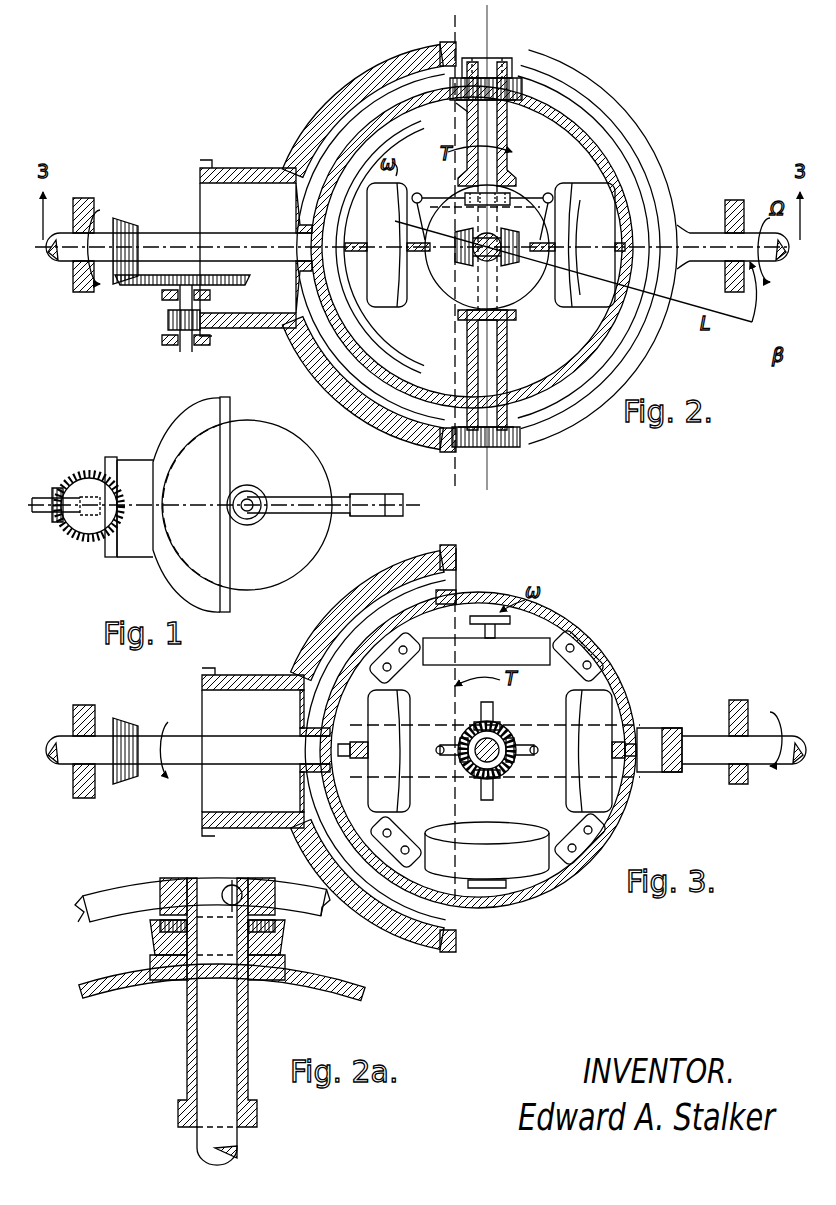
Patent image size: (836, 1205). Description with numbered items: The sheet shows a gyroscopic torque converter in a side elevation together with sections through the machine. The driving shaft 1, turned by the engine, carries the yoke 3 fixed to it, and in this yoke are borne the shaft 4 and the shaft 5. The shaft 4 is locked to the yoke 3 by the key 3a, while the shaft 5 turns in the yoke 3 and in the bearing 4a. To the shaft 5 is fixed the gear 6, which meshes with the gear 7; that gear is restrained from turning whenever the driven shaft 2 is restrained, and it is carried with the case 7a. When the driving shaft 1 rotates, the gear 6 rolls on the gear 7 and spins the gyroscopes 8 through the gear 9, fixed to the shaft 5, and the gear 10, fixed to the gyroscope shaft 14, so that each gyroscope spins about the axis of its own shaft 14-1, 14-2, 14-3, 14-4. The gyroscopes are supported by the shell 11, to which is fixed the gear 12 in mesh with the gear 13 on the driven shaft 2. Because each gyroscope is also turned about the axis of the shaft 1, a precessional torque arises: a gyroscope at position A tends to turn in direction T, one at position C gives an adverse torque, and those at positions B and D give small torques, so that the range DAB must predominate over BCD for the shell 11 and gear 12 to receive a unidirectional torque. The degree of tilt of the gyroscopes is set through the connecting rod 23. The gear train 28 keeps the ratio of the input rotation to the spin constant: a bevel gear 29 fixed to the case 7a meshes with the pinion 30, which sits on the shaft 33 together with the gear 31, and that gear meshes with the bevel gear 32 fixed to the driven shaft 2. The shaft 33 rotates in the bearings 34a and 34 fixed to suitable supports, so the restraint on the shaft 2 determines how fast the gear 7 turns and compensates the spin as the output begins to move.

In FIG. 2, the driving shaft 1 is at (718, 262).
In FIG. 3, the driving shaft 1 is at (700, 770).
In FIG. 2, the driven shaft 2 is at (76, 268).
In FIG. 1, the driven shaft 2 is at (43, 495).
In FIG. 3, the driven shaft 2 is at (76, 770).
In FIG. 2, the yoke 3 is at (642, 150).
In FIG. 1, the yoke 3 is at (290, 512).
In FIG. 3, the yoke 3 is at (312, 773).
In FIG. 2A, the yoke 3 is at (300, 912).
In FIG. 2, the key 3a is at (508, 70).
In FIG. 2A, the key 3a is at (226, 884).
In FIG. 2, the shaft 4 is at (497, 128).
In FIG. 1, the shaft 4 is at (406, 505).
In FIG. 2A, the shaft 4 is at (234, 1146).
In FIG. 2, the bearing 4a is at (508, 160).
In FIG. 2, the shaft 5 is at (520, 335).
In FIG. 2, the gear 6 is at (520, 438).
In FIG. 2, the gear 7 is at (470, 46).
In FIG. 1, the gear 7 is at (232, 598).
In FIG. 3, the gear 7 is at (456, 552).
In FIG. 2, the case 7a is at (322, 372).
In FIG. 1, the case 7a is at (178, 566).
In FIG. 3, the case 7a is at (328, 626).
In FIG. 2, the gyroscopes 8 is at (445, 290).
In FIG. 2, the gear 9 is at (492, 240).
In FIG. 3, the gear 9 is at (514, 748).
In FIG. 2, the gear 10 is at (500, 258).
In FIG. 3, the gear 10 is at (498, 738).
In FIG. 2, the shell 11 is at (576, 138).
In FIG. 1, the shell 11 is at (300, 560).
In FIG. 3, the shell 11 is at (560, 622).
In FIG. 2A, the shell 11 is at (330, 980).
In FIG. 2, the gear 12 is at (522, 90).
In FIG. 1, the gear 12 is at (256, 492).
In FIG. 2A, the gear 12 is at (158, 938).
In FIG. 2, the gear 13 is at (470, 104).
In FIG. 3, the gear 13 is at (456, 596).
In FIG. 2, the shaft 14 is at (412, 262).
In FIG. 3, the gyroscope shaft 14-1 is at (494, 712).
In FIG. 3, the gyroscope shaft 14-2 is at (528, 760).
In FIG. 3, the gyroscope shaft 14-3 is at (490, 800).
In FIG. 3, the gyroscope shaft 14-4 is at (445, 735).
In FIG. 2, the connecting rod 23 is at (455, 196).
In FIG. 2, the gear train 28 is at (102, 325).
In FIG. 2, the bevel gear 29 is at (196, 168).
In FIG. 1, the bevel gear 29 is at (108, 565).
In FIG. 3, the bevel gear 29 is at (200, 828).
In FIG. 2, the pinion 30 is at (168, 320).
In FIG. 2, the gear 31 is at (140, 288).
In FIG. 1, the gear 31 is at (84, 540).
In FIG. 2, the bevel gear 32 is at (118, 215).
In FIG. 1, the bevel gear 32 is at (55, 522).
In FIG. 3, the bevel gear 32 is at (130, 784).
In FIG. 2, the shaft 33 is at (186, 352).
In FIG. 2, the bearing 34 is at (210, 342).
In FIG. 2, the bearing 34a is at (210, 295).
In FIG. 3, the gyroscope position A is at (530, 670).
In FIG. 3, the gyroscope position B is at (565, 716).
In FIG. 3, the gyroscope position C is at (445, 840).
In FIG. 3, the gyroscope position D is at (408, 708).